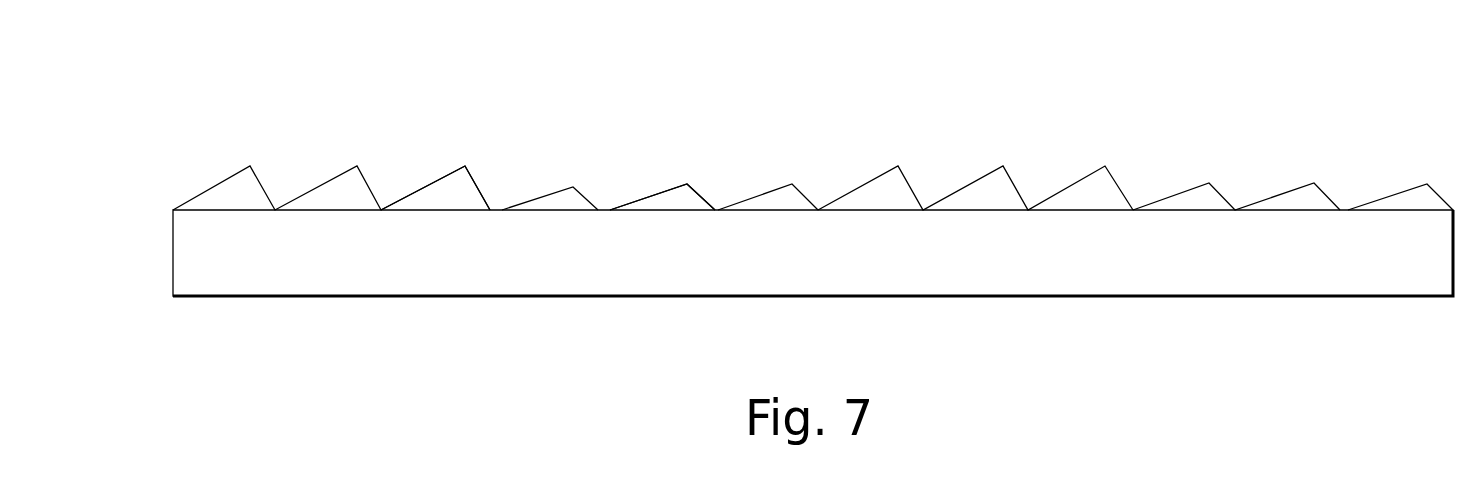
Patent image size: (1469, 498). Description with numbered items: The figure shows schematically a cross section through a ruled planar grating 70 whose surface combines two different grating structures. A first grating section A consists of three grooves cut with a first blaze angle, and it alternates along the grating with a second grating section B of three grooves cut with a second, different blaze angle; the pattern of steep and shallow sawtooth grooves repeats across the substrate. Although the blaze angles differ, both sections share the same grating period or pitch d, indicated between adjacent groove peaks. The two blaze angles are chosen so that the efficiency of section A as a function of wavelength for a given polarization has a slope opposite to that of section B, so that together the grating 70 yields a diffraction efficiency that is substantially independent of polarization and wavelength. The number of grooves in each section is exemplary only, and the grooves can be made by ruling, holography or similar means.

The planar grating 70 is at (267, 296).
The first grating section A is at (163, 120).
The second grating section B is at (792, 120).
The grating pitch d is at (1003, 166).